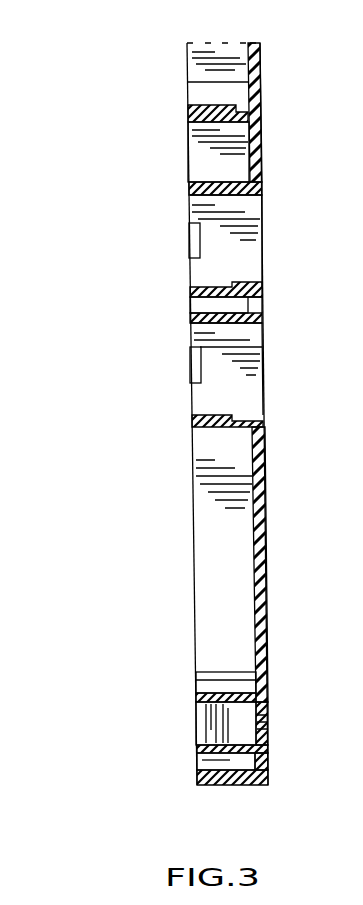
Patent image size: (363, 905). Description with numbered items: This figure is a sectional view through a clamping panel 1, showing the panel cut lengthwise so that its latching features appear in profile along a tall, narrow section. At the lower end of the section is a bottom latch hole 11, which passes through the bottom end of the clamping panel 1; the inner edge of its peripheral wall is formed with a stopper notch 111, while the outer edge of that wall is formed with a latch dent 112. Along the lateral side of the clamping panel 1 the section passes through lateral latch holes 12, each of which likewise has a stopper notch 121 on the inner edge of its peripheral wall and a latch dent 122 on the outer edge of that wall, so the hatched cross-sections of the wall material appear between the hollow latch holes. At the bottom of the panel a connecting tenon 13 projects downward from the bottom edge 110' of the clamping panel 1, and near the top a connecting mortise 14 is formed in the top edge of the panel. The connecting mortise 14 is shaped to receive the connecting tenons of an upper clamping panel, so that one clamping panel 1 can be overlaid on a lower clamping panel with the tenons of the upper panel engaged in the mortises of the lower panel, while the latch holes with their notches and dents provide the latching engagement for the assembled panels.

The clamping panel 1 is at (262, 82).
The bottom latch hole 11 is at (222, 735).
The lateral latch hole 12 is at (195, 270).
The connecting tenon 13 is at (190, 112).
The connecting mortise 14 is at (190, 137).
The stopper notch 111 is at (212, 700).
The latch dent 112 is at (268, 730).
The stopper notch 121 is at (195, 243).
The latch dent 122 is at (258, 195).
The bottom edge 110' is at (301, 790).